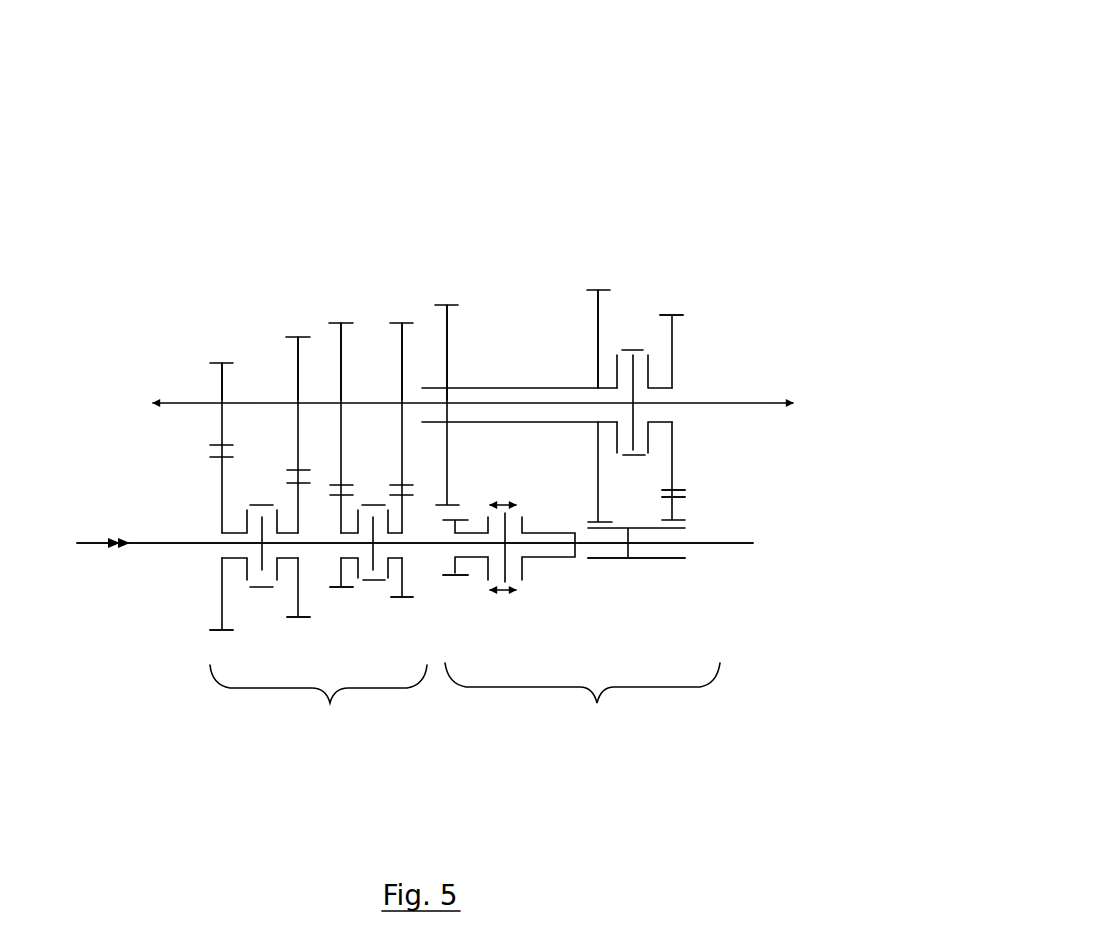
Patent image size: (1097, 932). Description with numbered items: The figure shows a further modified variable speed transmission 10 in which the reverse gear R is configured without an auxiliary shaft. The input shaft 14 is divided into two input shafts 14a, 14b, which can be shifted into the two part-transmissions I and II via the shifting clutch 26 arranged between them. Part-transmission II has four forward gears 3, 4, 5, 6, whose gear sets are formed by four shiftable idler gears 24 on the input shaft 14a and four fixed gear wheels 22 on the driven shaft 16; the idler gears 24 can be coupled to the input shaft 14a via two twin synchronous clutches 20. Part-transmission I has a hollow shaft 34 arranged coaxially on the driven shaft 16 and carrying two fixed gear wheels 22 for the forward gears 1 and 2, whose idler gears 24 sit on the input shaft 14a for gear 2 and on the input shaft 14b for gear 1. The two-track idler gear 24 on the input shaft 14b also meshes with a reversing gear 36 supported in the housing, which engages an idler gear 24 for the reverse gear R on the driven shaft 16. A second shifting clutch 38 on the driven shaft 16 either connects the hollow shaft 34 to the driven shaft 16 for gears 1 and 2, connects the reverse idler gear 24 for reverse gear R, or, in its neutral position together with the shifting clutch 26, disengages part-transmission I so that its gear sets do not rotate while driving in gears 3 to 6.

The variable speed transmission 10 is at (662, 94).
The forward gear 1 is at (592, 258).
The forward gear 2 is at (445, 291).
The forward gear 3 is at (401, 310).
The forward gear 4 is at (340, 313).
The forward gear 5 is at (297, 325).
The forward gear 6 is at (222, 358).
The reverse gear R is at (670, 294).
The input shaft 14 is at (172, 564).
The input shaft 14a is at (207, 542).
The input shaft 14b is at (700, 548).
The driven shaft 16 is at (199, 390).
The twin synchronous clutch 20 is at (258, 497).
The fixed gear wheel 22 is at (297, 392).
The idler gear 24 is at (225, 607).
The shifting clutch 26 is at (513, 616).
The hollow shaft 34 is at (545, 386).
The reversing gear 36 is at (675, 508).
The second shifting clutch 38 is at (631, 294).